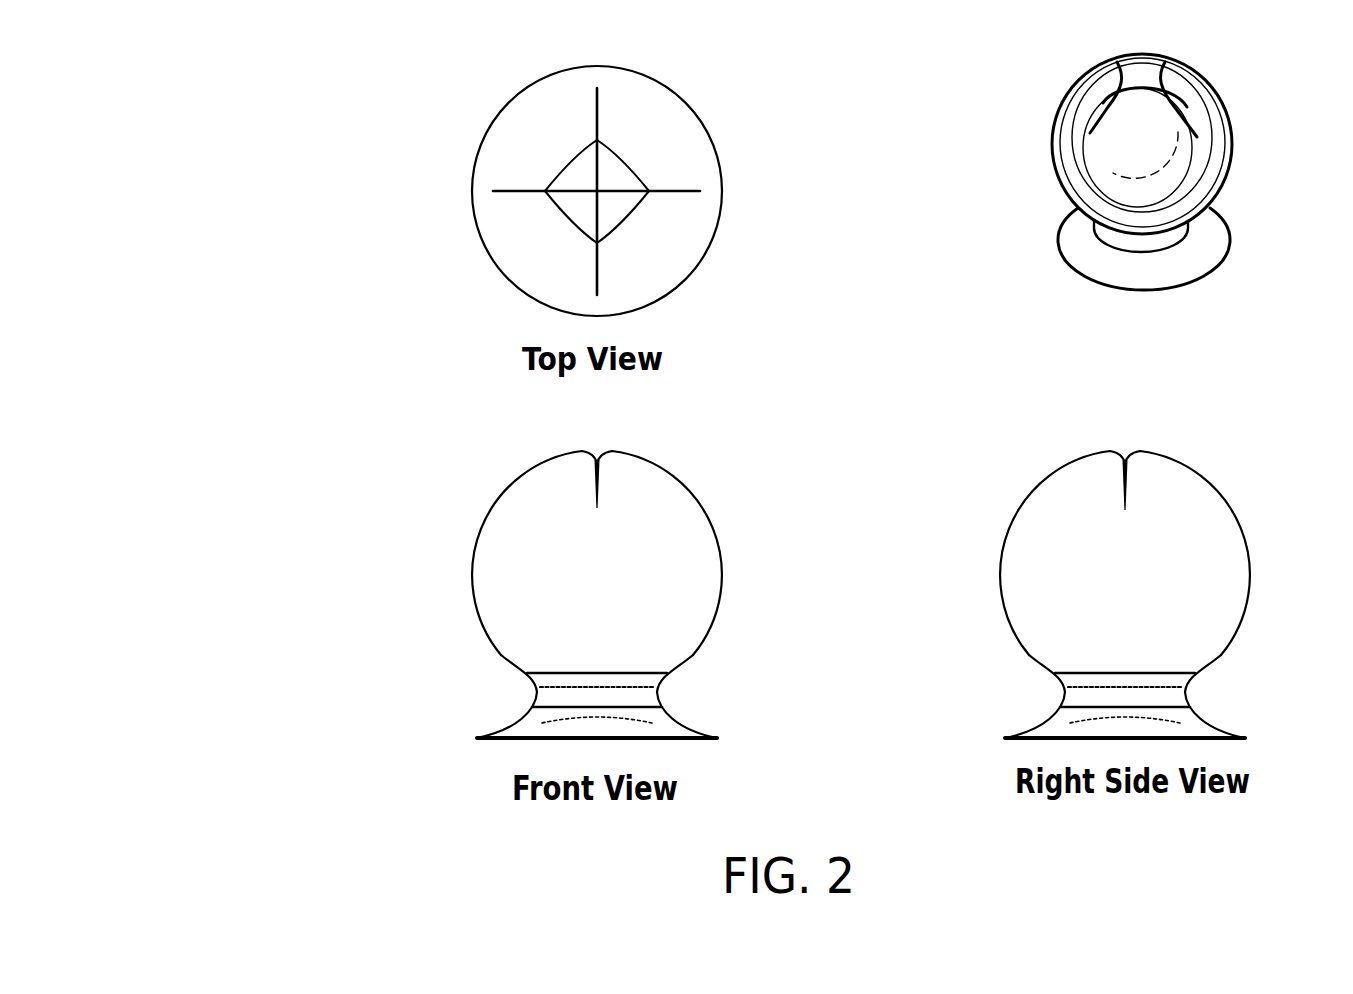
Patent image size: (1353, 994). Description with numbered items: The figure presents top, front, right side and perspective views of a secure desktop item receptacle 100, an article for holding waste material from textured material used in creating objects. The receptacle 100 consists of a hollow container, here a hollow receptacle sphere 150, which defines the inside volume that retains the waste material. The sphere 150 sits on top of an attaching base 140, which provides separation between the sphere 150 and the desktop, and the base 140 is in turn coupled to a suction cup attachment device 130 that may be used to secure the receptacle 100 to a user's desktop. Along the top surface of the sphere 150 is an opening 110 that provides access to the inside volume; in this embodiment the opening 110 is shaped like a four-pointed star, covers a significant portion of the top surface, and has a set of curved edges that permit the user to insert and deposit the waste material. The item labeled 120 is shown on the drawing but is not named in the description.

The secure desktop item receptacle 100 is at (1203, 110).
The opening 110 is at (590, 197).
The slit 120 is at (578, 492).
The suction cup attachment device 130 is at (597, 724).
The attaching base 140 is at (648, 693).
The hollow receptacle sphere 150 is at (600, 575).